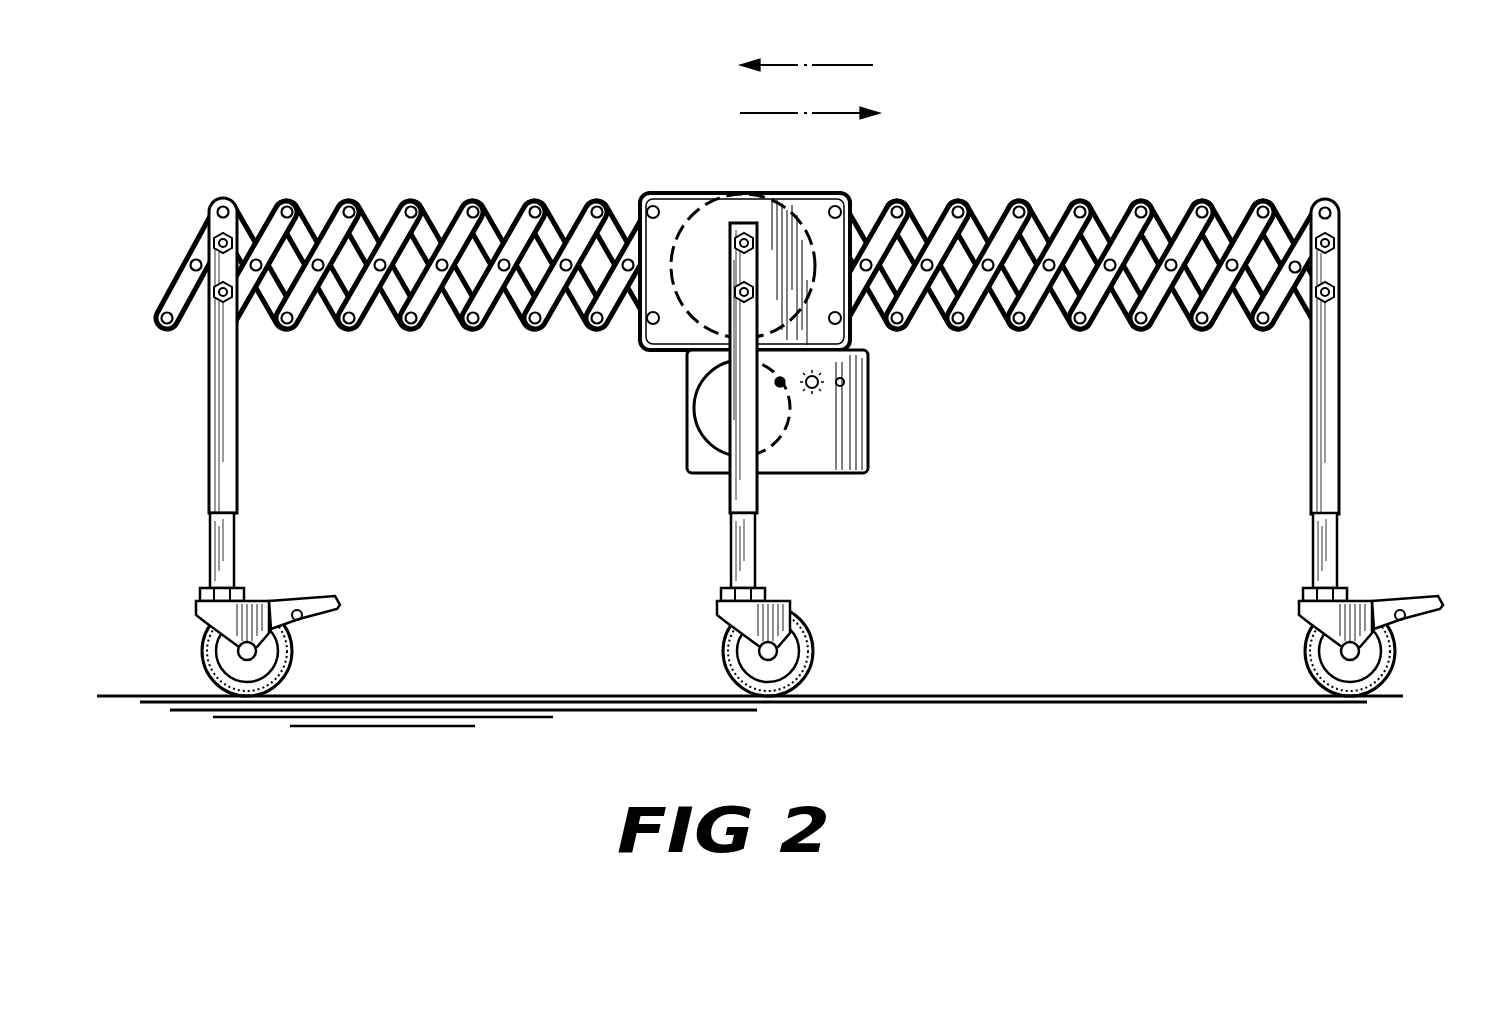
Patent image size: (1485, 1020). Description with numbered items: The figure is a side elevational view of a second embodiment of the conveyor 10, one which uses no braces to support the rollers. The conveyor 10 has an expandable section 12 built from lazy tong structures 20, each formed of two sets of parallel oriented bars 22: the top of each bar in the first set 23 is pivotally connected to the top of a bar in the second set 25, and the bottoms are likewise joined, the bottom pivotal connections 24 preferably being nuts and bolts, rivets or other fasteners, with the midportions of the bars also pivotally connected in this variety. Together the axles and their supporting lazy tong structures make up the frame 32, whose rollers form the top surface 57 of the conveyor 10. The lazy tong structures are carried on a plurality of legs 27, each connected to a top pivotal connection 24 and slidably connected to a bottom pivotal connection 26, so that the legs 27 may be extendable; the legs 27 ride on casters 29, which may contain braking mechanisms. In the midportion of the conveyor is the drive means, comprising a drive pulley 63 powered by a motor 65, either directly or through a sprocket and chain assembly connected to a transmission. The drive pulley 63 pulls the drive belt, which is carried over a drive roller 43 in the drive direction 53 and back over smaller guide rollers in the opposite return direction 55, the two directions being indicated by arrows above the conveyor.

The conveyor 10 is at (193, 145).
The expandable section 12 is at (1080, 267).
The lazy tong structure 20 is at (1150, 196).
The bars 22 is at (1110, 300).
The first set 23 is at (1247, 322).
The pivotal connection 24 is at (898, 196).
The second set 25 is at (1185, 295).
The bottom pivotal connection 26 is at (1005, 335).
The legs 27 is at (213, 480).
The casters 29 is at (268, 607).
The frame 32 is at (388, 200).
The drive roller 43 is at (281, 195).
The drive direction 53 is at (838, 65).
The return direction 55 is at (838, 113).
The top surface 57 is at (496, 192).
The drive pulley 63 is at (688, 196).
The motor 65 is at (713, 410).